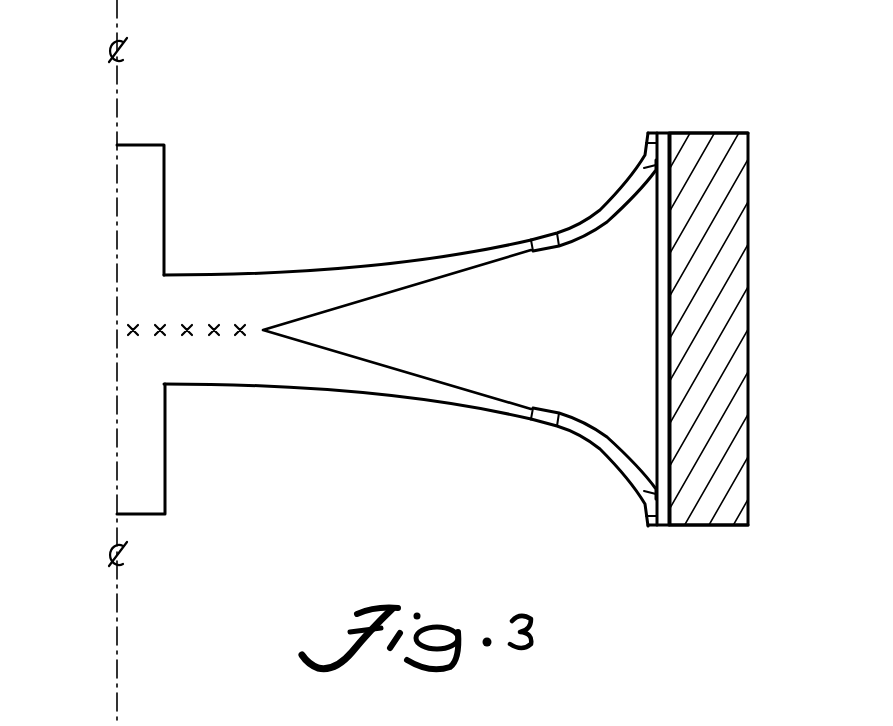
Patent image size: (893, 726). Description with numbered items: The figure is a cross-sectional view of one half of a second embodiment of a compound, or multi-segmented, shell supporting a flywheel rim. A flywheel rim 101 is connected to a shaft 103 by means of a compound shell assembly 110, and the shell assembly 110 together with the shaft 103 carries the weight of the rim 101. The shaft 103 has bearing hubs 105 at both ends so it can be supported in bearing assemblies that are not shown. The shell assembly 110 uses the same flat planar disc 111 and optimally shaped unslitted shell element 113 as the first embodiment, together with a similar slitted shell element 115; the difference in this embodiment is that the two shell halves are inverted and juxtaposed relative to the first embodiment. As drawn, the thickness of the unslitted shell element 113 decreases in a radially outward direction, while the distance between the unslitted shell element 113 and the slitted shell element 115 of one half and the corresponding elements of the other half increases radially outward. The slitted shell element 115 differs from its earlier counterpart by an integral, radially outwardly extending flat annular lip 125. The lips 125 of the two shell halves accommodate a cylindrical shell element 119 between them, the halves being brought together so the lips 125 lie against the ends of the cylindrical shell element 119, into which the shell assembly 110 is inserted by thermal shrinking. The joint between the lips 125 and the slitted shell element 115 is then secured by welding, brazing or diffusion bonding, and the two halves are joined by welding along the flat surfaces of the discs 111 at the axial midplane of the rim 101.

The flywheel rim 101 is at (748, 200).
The shaft 103 is at (133, 370).
The bearing hubs 105 is at (164, 145).
The shell assembly 110 is at (343, 196).
The flat planar disc 111 is at (238, 373).
The unslitted shell element 113 is at (407, 390).
The slitted shell element 115 is at (589, 467).
The cylindrical shell element 119 is at (657, 333).
The flat annular lip 125 is at (687, 133).